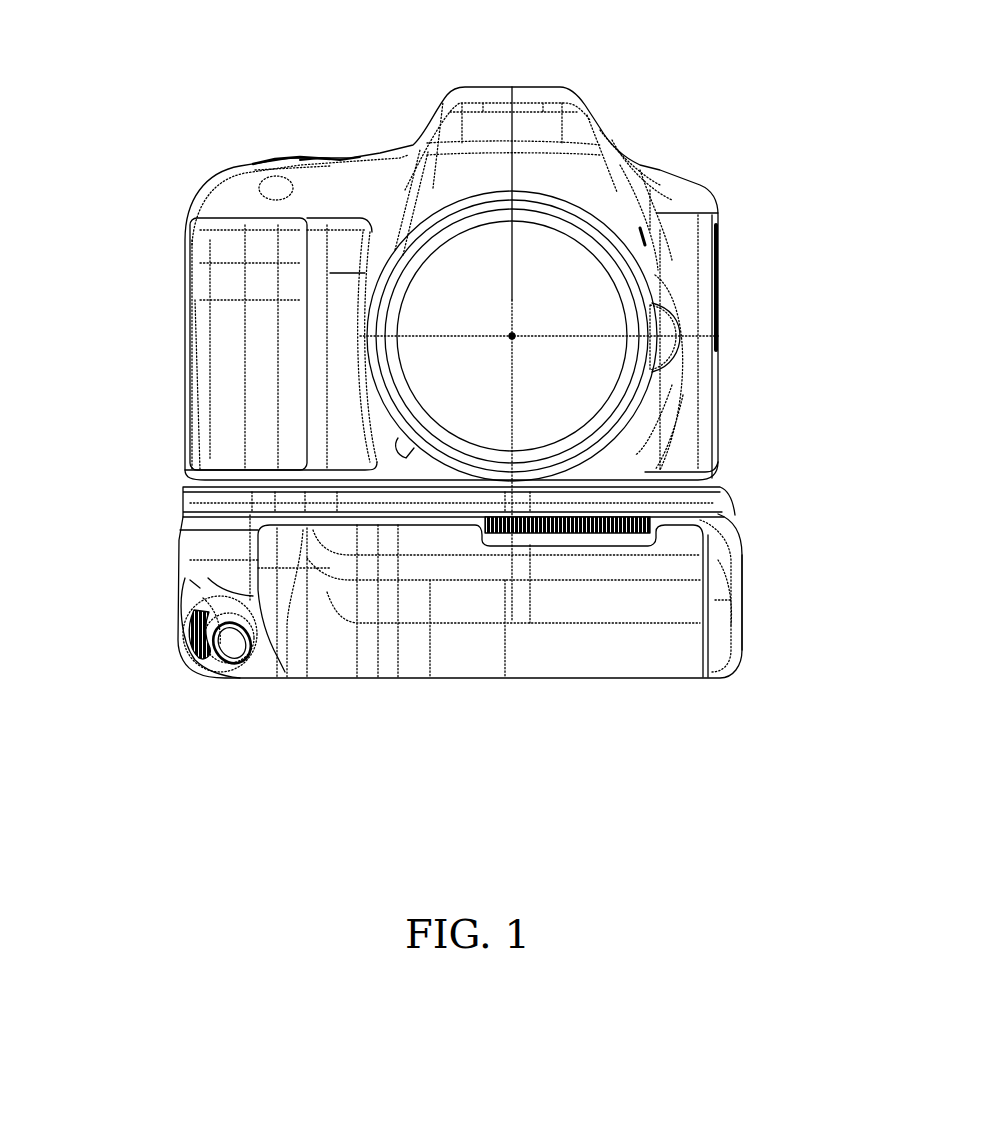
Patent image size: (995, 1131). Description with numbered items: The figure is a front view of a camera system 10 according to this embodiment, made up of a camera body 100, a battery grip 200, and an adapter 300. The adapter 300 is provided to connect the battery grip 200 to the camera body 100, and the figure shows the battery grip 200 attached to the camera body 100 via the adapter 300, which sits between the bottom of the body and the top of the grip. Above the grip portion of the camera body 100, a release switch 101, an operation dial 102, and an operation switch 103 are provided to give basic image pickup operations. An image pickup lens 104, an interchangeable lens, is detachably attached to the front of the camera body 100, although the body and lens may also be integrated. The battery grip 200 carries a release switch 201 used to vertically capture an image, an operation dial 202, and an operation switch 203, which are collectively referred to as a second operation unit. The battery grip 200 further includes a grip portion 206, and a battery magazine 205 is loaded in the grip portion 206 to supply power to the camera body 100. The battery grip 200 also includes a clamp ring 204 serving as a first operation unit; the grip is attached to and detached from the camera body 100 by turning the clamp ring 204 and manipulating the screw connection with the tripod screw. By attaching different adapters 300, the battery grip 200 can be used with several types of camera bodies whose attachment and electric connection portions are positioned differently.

The camera system 10 is at (788, 49).
The camera body 100 is at (670, 173).
The release switch 101 is at (260, 188).
The operation dial 102 is at (263, 158).
The operation switch 103 is at (313, 167).
The image pickup lens 104 is at (637, 268).
The battery grip 200 is at (517, 677).
The release switch 201 is at (235, 643).
The operation dial 202 is at (182, 623).
The operation switch 203 is at (190, 612).
The clamp ring 204 is at (585, 535).
The battery magazine 205 is at (725, 643).
The grip portion 206 is at (437, 653).
The adapter 300 is at (710, 502).